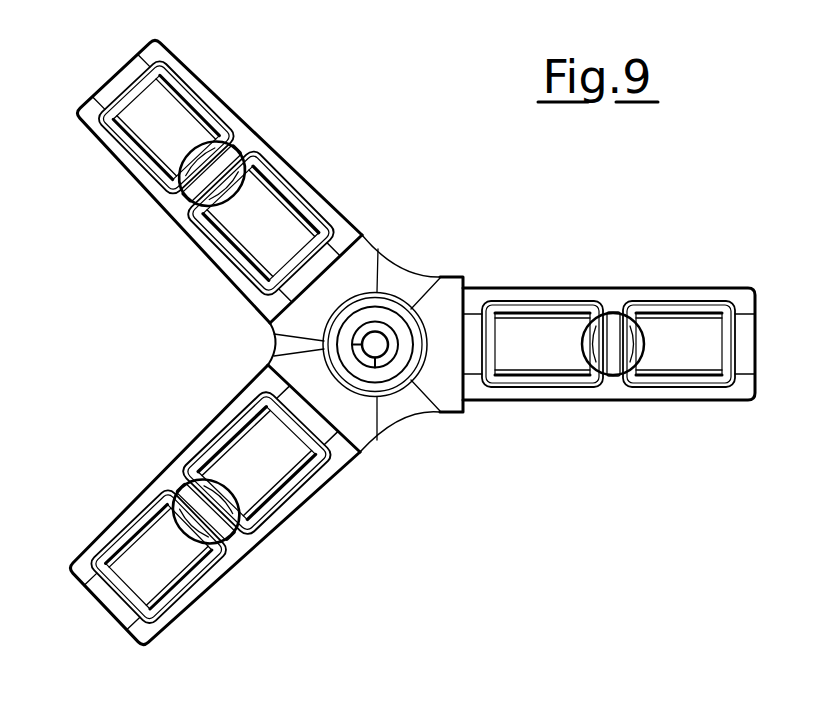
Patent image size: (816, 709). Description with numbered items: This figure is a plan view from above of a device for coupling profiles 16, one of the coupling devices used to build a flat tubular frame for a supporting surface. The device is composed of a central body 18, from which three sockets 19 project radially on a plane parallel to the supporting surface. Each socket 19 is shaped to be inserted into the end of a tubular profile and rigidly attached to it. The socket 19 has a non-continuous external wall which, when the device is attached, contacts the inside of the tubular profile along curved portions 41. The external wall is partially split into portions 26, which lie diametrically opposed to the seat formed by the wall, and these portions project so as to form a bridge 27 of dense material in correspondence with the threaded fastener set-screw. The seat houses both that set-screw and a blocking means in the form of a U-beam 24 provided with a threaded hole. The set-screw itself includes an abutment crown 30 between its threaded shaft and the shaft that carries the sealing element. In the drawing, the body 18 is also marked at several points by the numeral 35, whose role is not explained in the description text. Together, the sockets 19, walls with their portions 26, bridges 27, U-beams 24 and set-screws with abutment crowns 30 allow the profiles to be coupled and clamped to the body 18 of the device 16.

The coupling device 16 is at (422, 157).
The body 18 is at (398, 402).
The socket 19 is at (117, 174).
The U-beam 24 is at (270, 247).
The portions 26 is at (193, 102).
The bridge 27 is at (218, 163).
The abutment crown 30 is at (227, 212).
The face 35 is at (355, 233).
The curved portions 41 is at (270, 163).